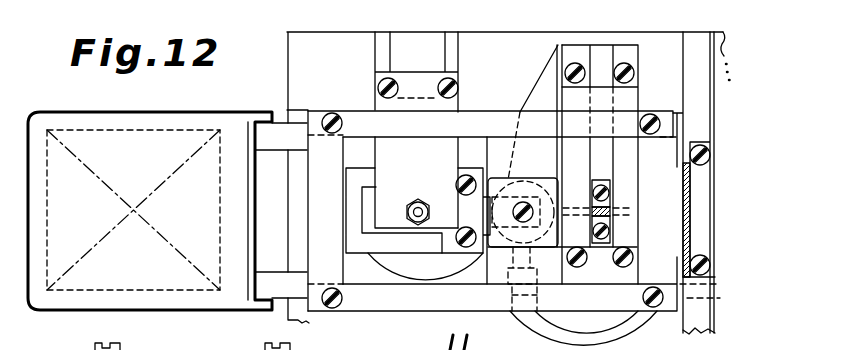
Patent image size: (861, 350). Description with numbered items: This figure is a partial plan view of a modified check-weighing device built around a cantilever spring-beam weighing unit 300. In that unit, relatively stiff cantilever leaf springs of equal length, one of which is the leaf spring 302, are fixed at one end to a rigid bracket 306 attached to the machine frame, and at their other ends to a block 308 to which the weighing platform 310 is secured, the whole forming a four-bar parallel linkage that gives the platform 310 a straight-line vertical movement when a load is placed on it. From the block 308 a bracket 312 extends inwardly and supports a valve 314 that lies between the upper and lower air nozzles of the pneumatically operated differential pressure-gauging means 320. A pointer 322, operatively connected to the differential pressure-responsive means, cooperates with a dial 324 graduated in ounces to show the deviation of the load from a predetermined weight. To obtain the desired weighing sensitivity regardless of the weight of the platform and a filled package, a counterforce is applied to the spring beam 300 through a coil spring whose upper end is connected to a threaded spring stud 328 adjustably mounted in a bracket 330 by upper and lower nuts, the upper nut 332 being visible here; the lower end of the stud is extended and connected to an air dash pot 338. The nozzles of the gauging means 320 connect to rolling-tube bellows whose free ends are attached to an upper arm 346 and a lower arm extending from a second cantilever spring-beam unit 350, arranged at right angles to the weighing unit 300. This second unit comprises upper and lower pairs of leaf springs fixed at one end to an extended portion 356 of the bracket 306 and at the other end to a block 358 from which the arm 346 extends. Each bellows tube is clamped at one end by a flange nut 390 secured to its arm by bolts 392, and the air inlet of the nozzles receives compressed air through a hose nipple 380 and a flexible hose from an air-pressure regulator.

The cantilever spring-beam weighing unit 300 is at (340, 98).
The cantilever leaf spring 302 is at (475, 112).
The bracket 306 is at (662, 202).
The block 308 is at (315, 197).
The weighing platform 310 is at (98, 115).
The bracket 312 is at (350, 237).
The valve 314 is at (524, 164).
The pneumatically operated differential pressure-gauging means 320 is at (498, 168).
The pointer 322 is at (617, 222).
The dial 324 is at (690, 232).
The threaded spring stud 328 is at (428, 186).
The bracket 330 is at (380, 62).
The upper nut 332 is at (428, 229).
The air dash pot 338 is at (420, 281).
The upper arm 346 is at (174, 349).
The second cantilever spring-beam unit 350 is at (592, 42).
The extended portion 356 is at (620, 65).
The block 358 is at (608, 285).
The hose nipple 380 is at (509, 300).
The flange nut 390 is at (617, 330).
The bolt 392 is at (522, 222).